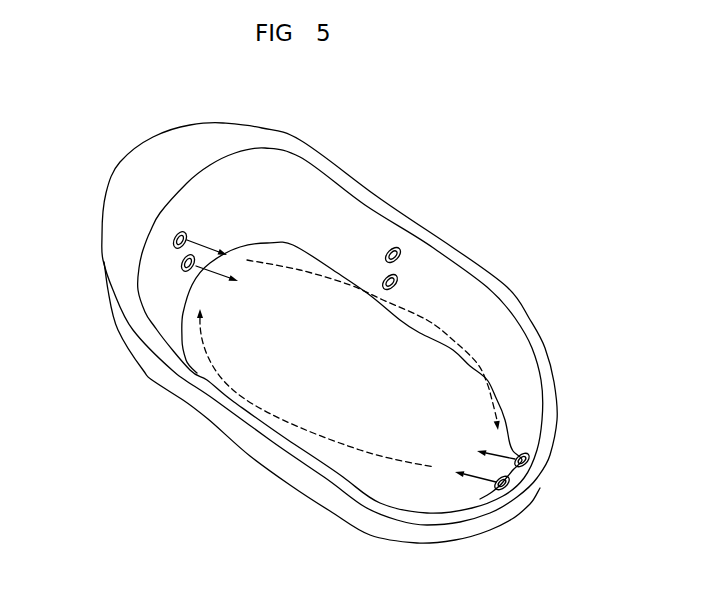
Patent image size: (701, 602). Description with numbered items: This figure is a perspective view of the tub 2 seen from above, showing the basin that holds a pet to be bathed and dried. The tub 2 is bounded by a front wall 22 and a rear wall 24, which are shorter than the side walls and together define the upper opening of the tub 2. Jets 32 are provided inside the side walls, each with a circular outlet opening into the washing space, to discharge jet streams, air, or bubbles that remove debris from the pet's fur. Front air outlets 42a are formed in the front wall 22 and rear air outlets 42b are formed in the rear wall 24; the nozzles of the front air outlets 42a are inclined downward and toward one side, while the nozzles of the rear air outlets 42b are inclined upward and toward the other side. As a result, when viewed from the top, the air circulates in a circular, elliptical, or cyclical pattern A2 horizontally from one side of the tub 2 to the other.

The tub 2 is at (112, 352).
The front wall 22 is at (503, 522).
The rear wall 24 is at (111, 158).
The jet 32 is at (413, 247).
The front air outlet 42a is at (540, 461).
The rear air outlet 42b is at (160, 236).
The cyclical pattern A2 is at (257, 402).